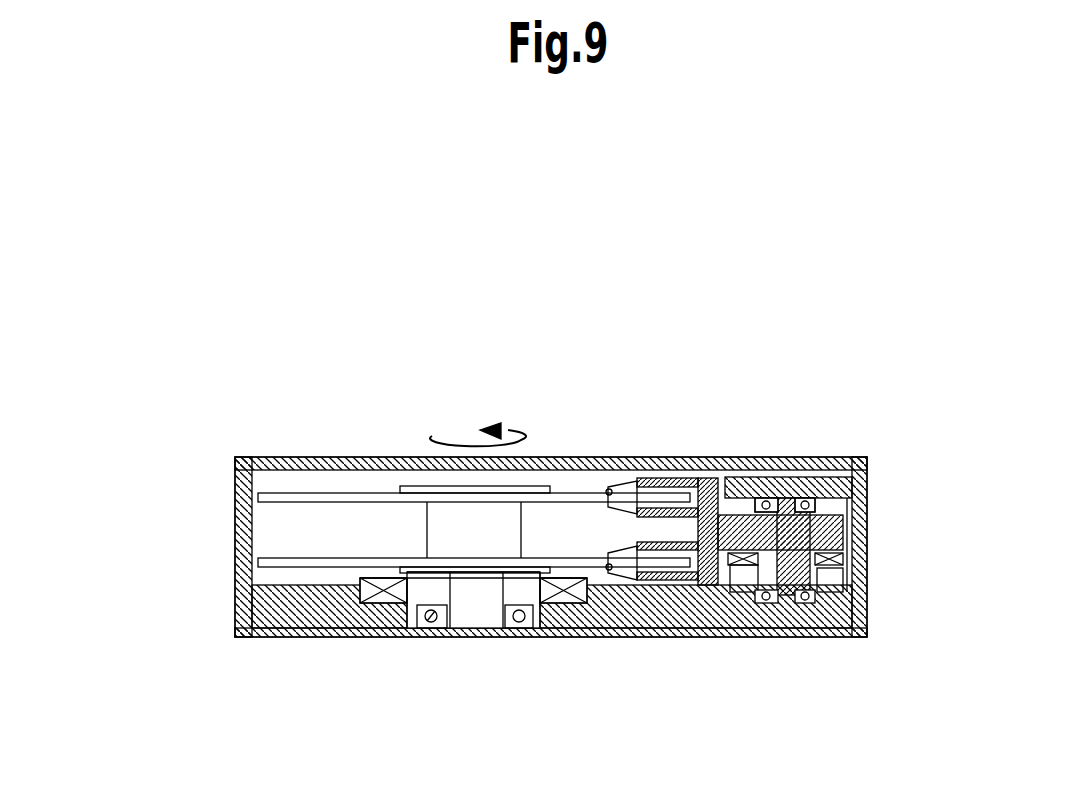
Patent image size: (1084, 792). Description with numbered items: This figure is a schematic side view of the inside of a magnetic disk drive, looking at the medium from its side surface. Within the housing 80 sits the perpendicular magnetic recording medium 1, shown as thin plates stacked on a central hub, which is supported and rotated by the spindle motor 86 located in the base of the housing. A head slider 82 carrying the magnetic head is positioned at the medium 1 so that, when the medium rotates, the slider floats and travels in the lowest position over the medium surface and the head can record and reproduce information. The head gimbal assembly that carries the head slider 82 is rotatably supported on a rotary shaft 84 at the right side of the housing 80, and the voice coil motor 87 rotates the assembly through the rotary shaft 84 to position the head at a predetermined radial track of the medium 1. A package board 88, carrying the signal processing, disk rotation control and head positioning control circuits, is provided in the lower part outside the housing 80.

The perpendicular magnetic recording medium 1 is at (273, 500).
The housing 80 is at (345, 457).
The head slider 82 is at (609, 490).
The rotary shaft 84 is at (867, 493).
The spindle motor 86 is at (413, 634).
The voice coil motor 87 is at (867, 602).
The package board 88 is at (605, 632).